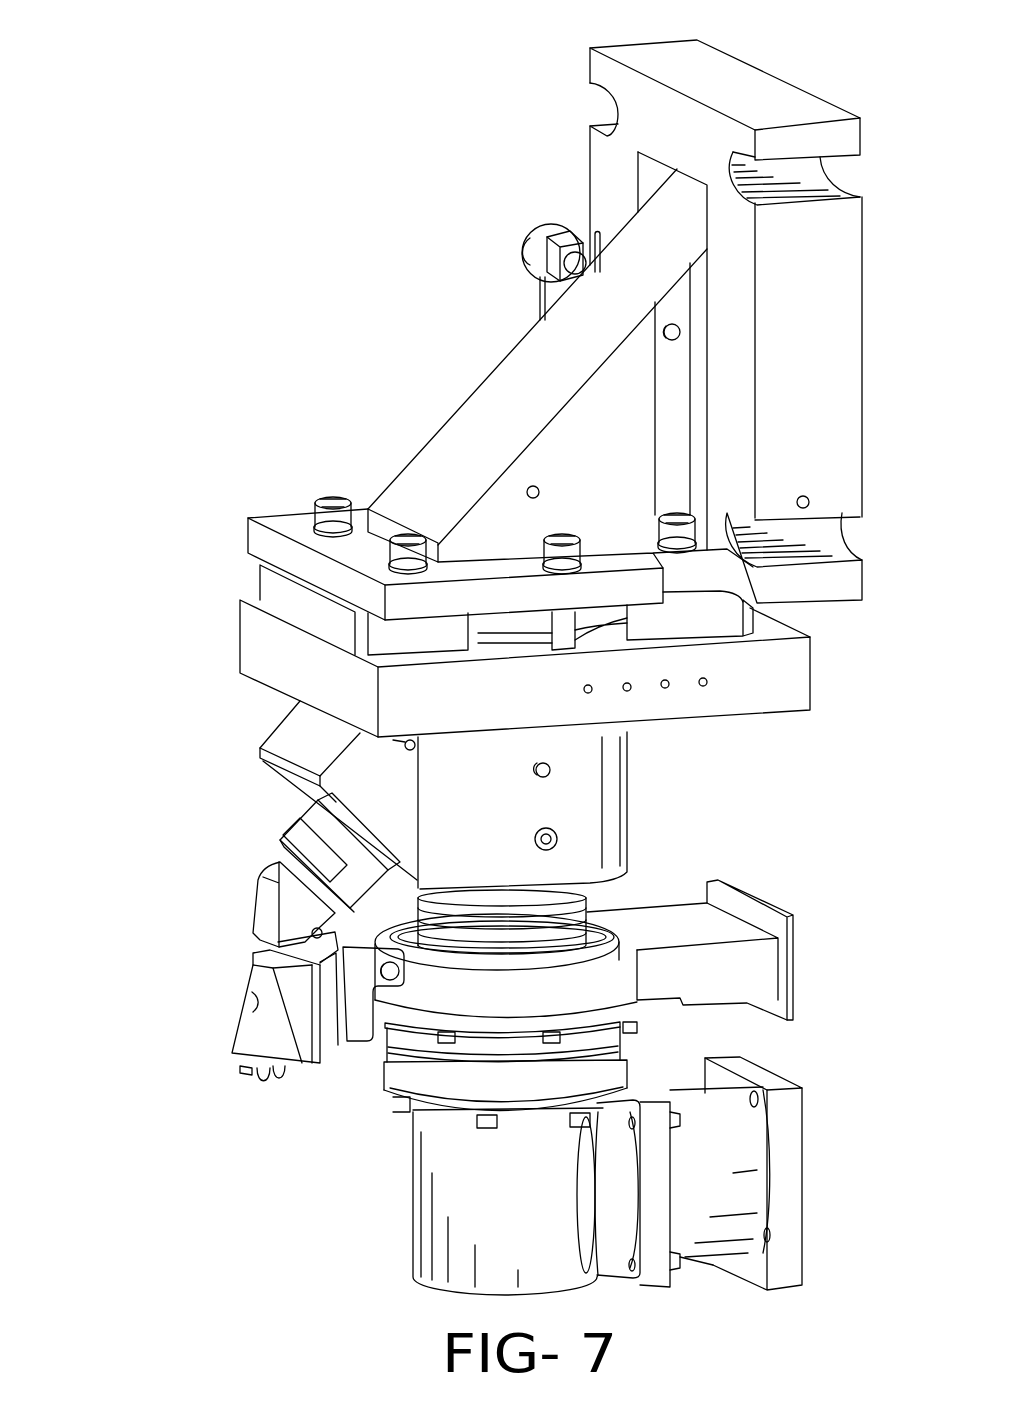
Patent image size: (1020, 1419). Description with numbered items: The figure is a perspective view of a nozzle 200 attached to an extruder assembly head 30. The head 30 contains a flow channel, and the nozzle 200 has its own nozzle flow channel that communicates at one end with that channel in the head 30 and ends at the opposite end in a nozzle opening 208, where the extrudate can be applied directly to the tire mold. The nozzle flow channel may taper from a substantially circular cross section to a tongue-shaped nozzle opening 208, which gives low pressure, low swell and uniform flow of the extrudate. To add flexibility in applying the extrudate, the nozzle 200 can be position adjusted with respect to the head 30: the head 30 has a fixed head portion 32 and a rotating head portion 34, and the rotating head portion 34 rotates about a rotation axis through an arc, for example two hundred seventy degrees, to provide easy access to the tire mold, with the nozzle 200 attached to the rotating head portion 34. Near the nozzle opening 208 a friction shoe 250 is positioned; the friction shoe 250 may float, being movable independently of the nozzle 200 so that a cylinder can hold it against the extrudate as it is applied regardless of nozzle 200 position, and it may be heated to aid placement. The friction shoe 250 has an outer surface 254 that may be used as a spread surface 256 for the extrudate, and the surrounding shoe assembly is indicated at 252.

The head 30 is at (359, 393).
The fixed head portion 32 is at (303, 735).
The rotating head portion 34 is at (340, 846).
The nozzle 200 is at (272, 878).
The nozzle opening 208 is at (258, 947).
The friction shoe 250 is at (236, 1057).
The gripper assembly 252 is at (288, 1092).
The outer surface 254 is at (253, 953).
The spread surface 256 is at (252, 1007).